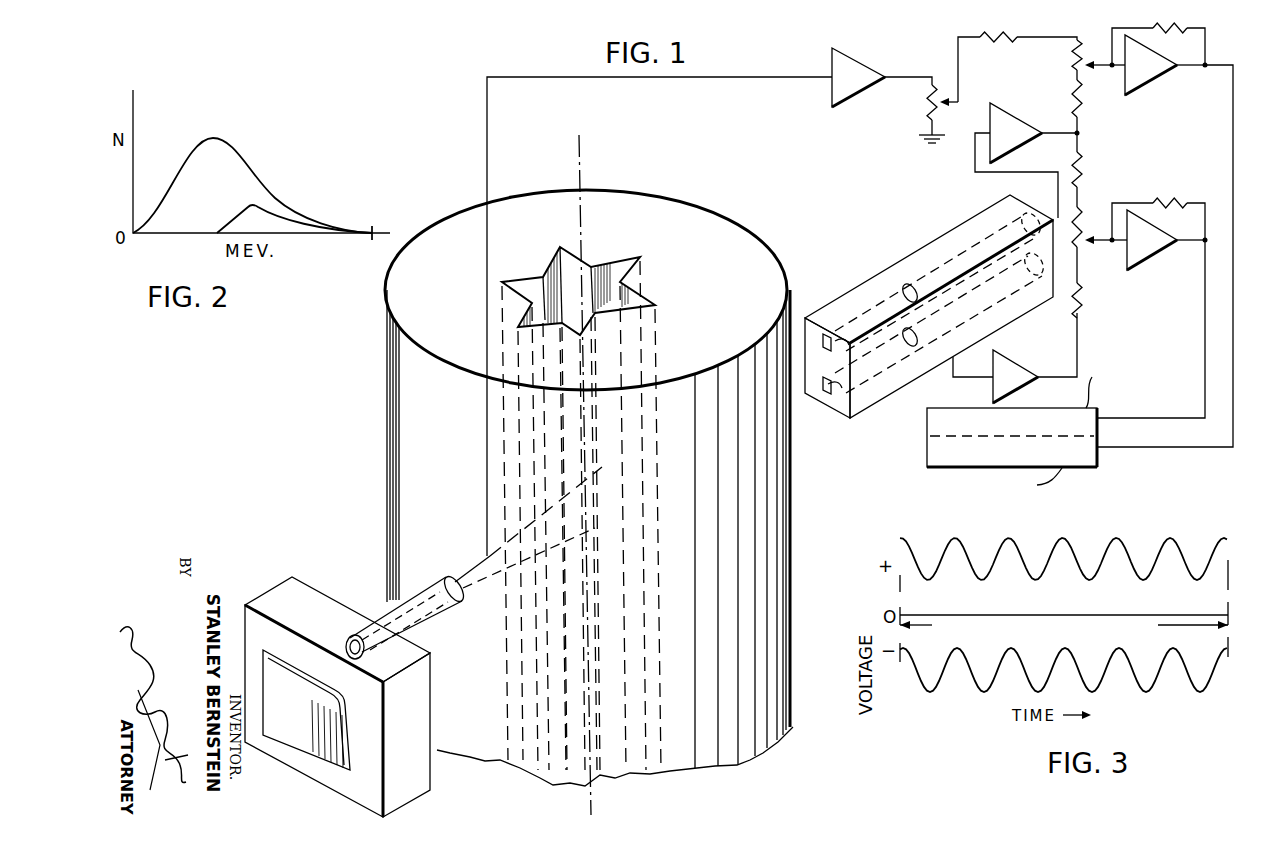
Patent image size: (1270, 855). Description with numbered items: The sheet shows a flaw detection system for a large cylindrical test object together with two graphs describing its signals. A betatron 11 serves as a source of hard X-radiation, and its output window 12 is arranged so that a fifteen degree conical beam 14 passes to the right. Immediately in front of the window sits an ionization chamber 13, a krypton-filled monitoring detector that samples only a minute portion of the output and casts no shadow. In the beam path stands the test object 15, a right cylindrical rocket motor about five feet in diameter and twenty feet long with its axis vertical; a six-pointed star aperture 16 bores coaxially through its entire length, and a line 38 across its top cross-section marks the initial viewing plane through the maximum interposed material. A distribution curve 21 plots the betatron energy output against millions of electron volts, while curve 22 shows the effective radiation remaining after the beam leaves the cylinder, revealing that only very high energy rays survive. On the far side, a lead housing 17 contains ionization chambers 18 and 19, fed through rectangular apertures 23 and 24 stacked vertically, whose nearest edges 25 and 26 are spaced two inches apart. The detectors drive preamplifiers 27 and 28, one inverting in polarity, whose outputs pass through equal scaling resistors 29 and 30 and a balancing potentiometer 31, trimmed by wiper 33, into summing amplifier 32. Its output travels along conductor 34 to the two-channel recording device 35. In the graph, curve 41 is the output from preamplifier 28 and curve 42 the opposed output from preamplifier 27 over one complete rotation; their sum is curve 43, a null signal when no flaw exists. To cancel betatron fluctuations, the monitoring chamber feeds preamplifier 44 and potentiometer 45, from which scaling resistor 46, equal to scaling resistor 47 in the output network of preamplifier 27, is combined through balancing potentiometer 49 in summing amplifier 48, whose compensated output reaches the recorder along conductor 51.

In FIG. 1, the betatron 11 is at (276, 584).
In FIG. 1, the output window 12 is at (350, 634).
In FIG. 1, the ionization chamber 13 is at (412, 595).
In FIG. 1, the conical beam 14 is at (476, 560).
In FIG. 1, the test object 15 is at (387, 362).
In FIG. 1, the six-pointed star aperture 16 is at (613, 260).
In FIG. 1, the housing 17 is at (860, 286).
In FIG. 1, the ionization chamber 18 is at (953, 260).
In FIG. 1, the ionization chamber 19 is at (945, 375).
In FIG. 2, the distribution curve 21 is at (241, 161).
In FIG. 2, the curve 22 is at (271, 205).
In FIG. 1, the aperture 23 is at (828, 336).
In FIG. 1, the aperture 24 is at (830, 411).
In FIG. 1, the edge 25 is at (826, 382).
In FIG. 2, the edge 25 is at (386, 238).
In FIG. 1, the edge 26 is at (850, 385).
In FIG. 1, the preamplifier 27 is at (1018, 111).
In FIG. 1, the preamplifier 28 is at (1007, 355).
In FIG. 1, the scaling resistor 29 is at (1083, 168).
In FIG. 1, the scaling resistor 30 is at (1084, 311).
In FIG. 1, the balancing potentiometer 31 is at (1083, 222).
In FIG. 1, the summing amplifier 32 is at (1145, 258).
In FIG. 1, the wiper 33 is at (1088, 248).
In FIG. 1, the conductor 34 is at (1133, 418).
In FIG. 1, the two-channel recording device 35 is at (927, 447).
In FIG. 1, the line 38 is at (532, 302).
In FIG. 3, the curve 41 is at (1095, 542).
In FIG. 3, the curve 42 is at (1192, 678).
In FIG. 3, the curve 43 is at (1080, 615).
In FIG. 1, the preamplifier 44 is at (832, 58).
In FIG. 1, the potentiometer 45 is at (927, 107).
In FIG. 1, the scaling resistor 46 is at (1012, 46).
In FIG. 1, the scaling resistor 47 is at (1083, 111).
In FIG. 1, the summing amplifier 48 is at (1157, 76).
In FIG. 1, the balancing potentiometer 49 is at (1072, 60).
In FIG. 1, the conductor 51 is at (1233, 136).